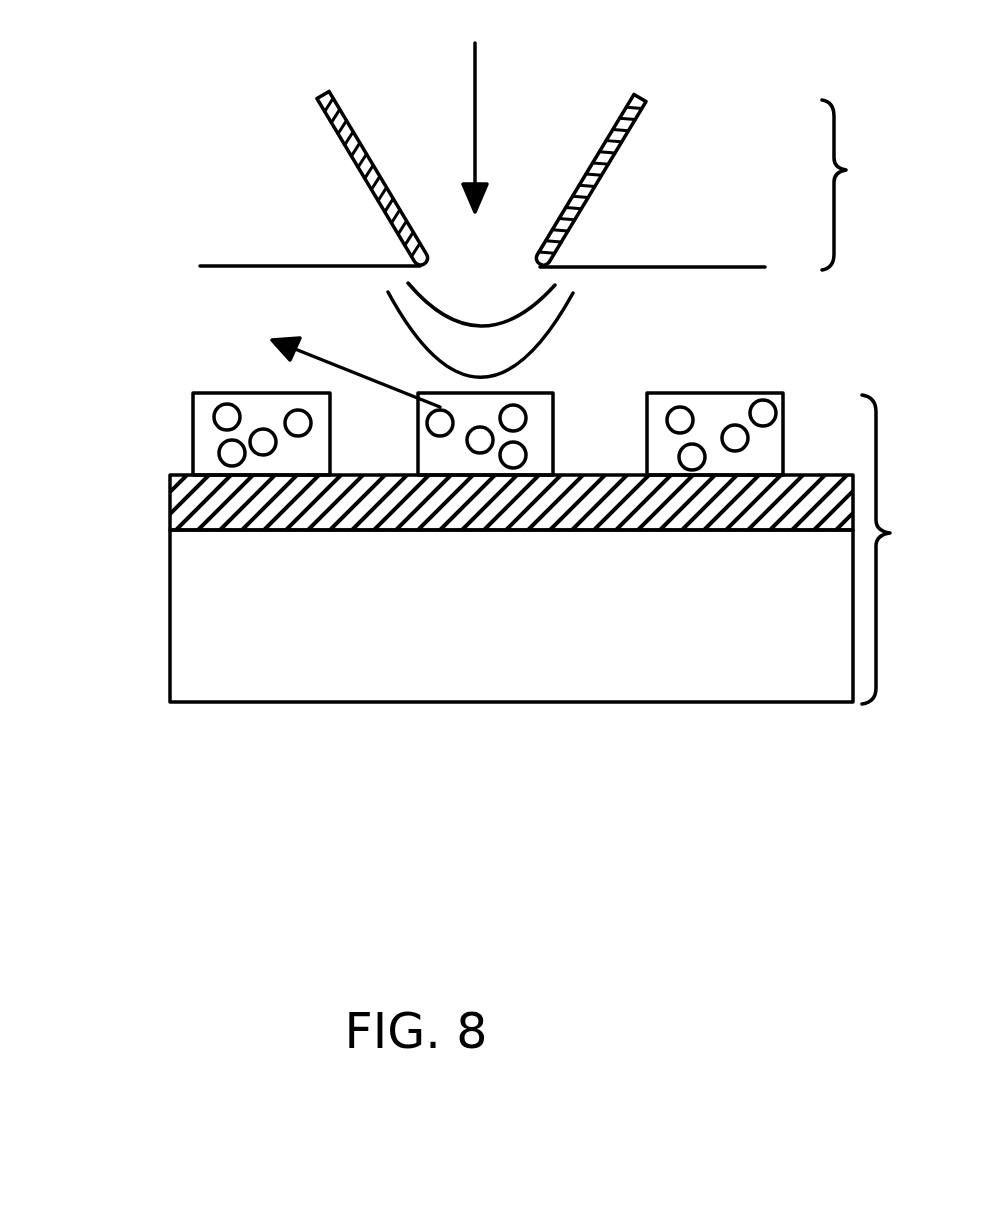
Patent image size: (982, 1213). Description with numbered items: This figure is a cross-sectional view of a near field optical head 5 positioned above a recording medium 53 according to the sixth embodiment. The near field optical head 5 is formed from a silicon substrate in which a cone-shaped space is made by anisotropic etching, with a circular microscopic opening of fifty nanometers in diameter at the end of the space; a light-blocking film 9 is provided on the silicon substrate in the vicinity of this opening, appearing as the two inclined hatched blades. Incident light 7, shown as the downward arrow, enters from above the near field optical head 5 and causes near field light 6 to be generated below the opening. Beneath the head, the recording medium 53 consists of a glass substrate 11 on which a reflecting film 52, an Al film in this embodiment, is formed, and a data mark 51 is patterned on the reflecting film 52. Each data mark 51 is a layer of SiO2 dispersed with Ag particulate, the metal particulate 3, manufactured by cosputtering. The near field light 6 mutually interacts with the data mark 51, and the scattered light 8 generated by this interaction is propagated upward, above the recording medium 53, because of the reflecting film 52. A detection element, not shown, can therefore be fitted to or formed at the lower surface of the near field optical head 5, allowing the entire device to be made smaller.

The metal particulate 3 is at (764, 410).
The near field optical head 5 is at (852, 185).
The near field light 6 is at (440, 340).
The incident light 7 is at (475, 106).
The scattered light 8 is at (340, 359).
The light-blocking film 9 is at (324, 94).
The glass substrate 11 is at (203, 630).
The data mark 51 is at (560, 393).
The reflecting film 52 is at (170, 490).
The recording medium 53 is at (900, 549).